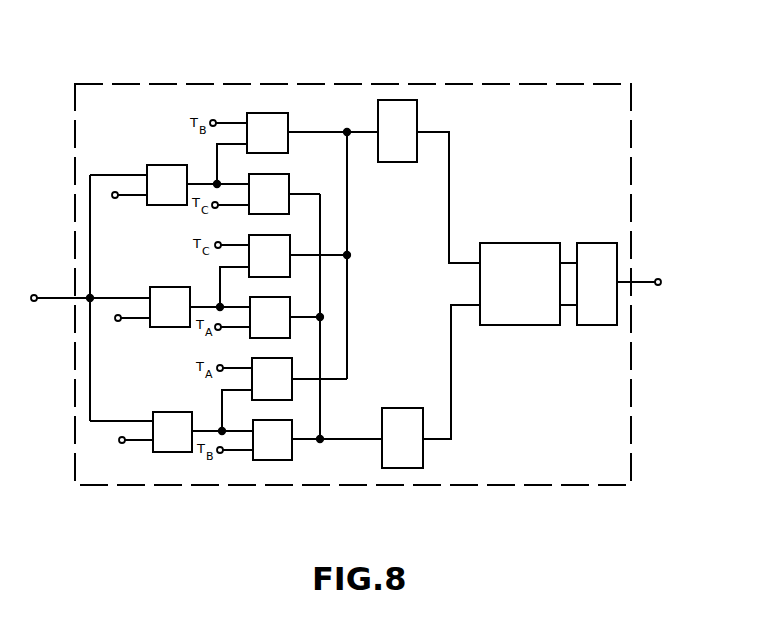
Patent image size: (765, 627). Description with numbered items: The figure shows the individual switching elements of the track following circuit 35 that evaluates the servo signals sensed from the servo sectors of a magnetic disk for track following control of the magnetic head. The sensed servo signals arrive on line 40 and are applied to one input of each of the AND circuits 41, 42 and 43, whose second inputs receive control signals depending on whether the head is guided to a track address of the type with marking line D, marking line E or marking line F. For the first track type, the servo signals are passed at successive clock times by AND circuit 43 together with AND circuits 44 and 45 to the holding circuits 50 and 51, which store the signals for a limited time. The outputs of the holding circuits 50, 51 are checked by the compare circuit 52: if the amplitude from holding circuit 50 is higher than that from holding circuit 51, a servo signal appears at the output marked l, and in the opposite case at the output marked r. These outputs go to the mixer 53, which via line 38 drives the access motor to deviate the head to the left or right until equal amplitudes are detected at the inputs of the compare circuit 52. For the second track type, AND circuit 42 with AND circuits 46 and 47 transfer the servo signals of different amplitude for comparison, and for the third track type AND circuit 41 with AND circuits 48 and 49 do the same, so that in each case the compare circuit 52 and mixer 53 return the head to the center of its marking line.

The track following circuit 35 is at (541, 450).
The line 38 is at (648, 282).
The line 40 is at (54, 298).
The AND circuit 41 is at (166, 412).
The AND circuit 42 is at (163, 287).
The AND circuit 43 is at (163, 165).
The AND circuit 44 is at (288, 120).
The AND circuit 45 is at (289, 181).
The AND circuit 46 is at (290, 242).
The AND circuit 47 is at (290, 304).
The AND circuit 48 is at (292, 366).
The AND circuit 49 is at (292, 429).
The holding circuit 50 is at (417, 113).
The holding circuit 51 is at (408, 408).
The compare circuit 52 is at (520, 247).
The mixer 53 is at (596, 246).